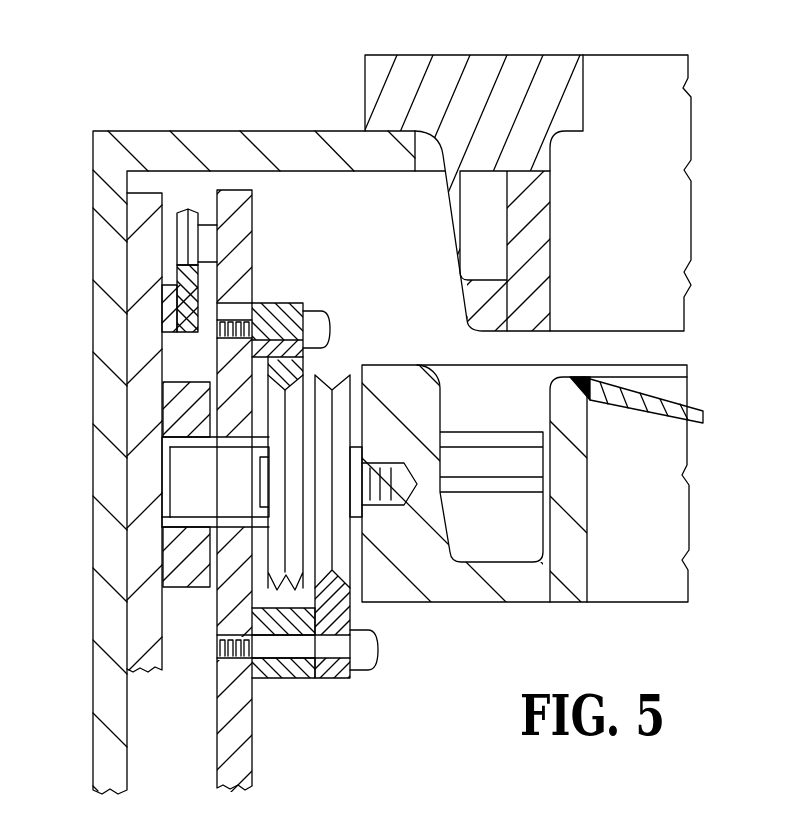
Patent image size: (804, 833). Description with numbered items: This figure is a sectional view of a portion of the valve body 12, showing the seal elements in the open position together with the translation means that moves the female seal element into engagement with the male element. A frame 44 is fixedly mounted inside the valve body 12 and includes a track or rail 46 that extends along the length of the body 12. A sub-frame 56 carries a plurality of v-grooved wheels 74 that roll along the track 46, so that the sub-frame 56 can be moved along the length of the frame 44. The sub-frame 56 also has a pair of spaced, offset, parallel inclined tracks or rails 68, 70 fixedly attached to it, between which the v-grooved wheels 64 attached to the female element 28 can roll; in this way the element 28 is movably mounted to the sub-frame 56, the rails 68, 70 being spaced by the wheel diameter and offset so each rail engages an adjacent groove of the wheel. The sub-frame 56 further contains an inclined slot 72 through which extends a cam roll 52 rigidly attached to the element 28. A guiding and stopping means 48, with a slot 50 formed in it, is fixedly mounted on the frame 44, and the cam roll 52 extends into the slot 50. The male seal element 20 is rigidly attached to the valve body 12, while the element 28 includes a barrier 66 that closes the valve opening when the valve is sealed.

The valve body 12 is at (130, 130).
The seal element 20 is at (365, 103).
The element 28 is at (563, 602).
The frame 44 is at (128, 670).
The track or rail 46 is at (175, 305).
The guiding and stopping means 48 is at (173, 402).
The slot 50 is at (167, 487).
The cam roll 52 is at (177, 528).
The sub-frame 56 is at (252, 717).
The v-grooved wheels 64 is at (340, 400).
The barrier 66 is at (653, 420).
The inclined track or rail 68 is at (293, 298).
The inclined track or rail 70 is at (345, 683).
The inclined slot 72 is at (217, 445).
The wheels 74 is at (178, 210).